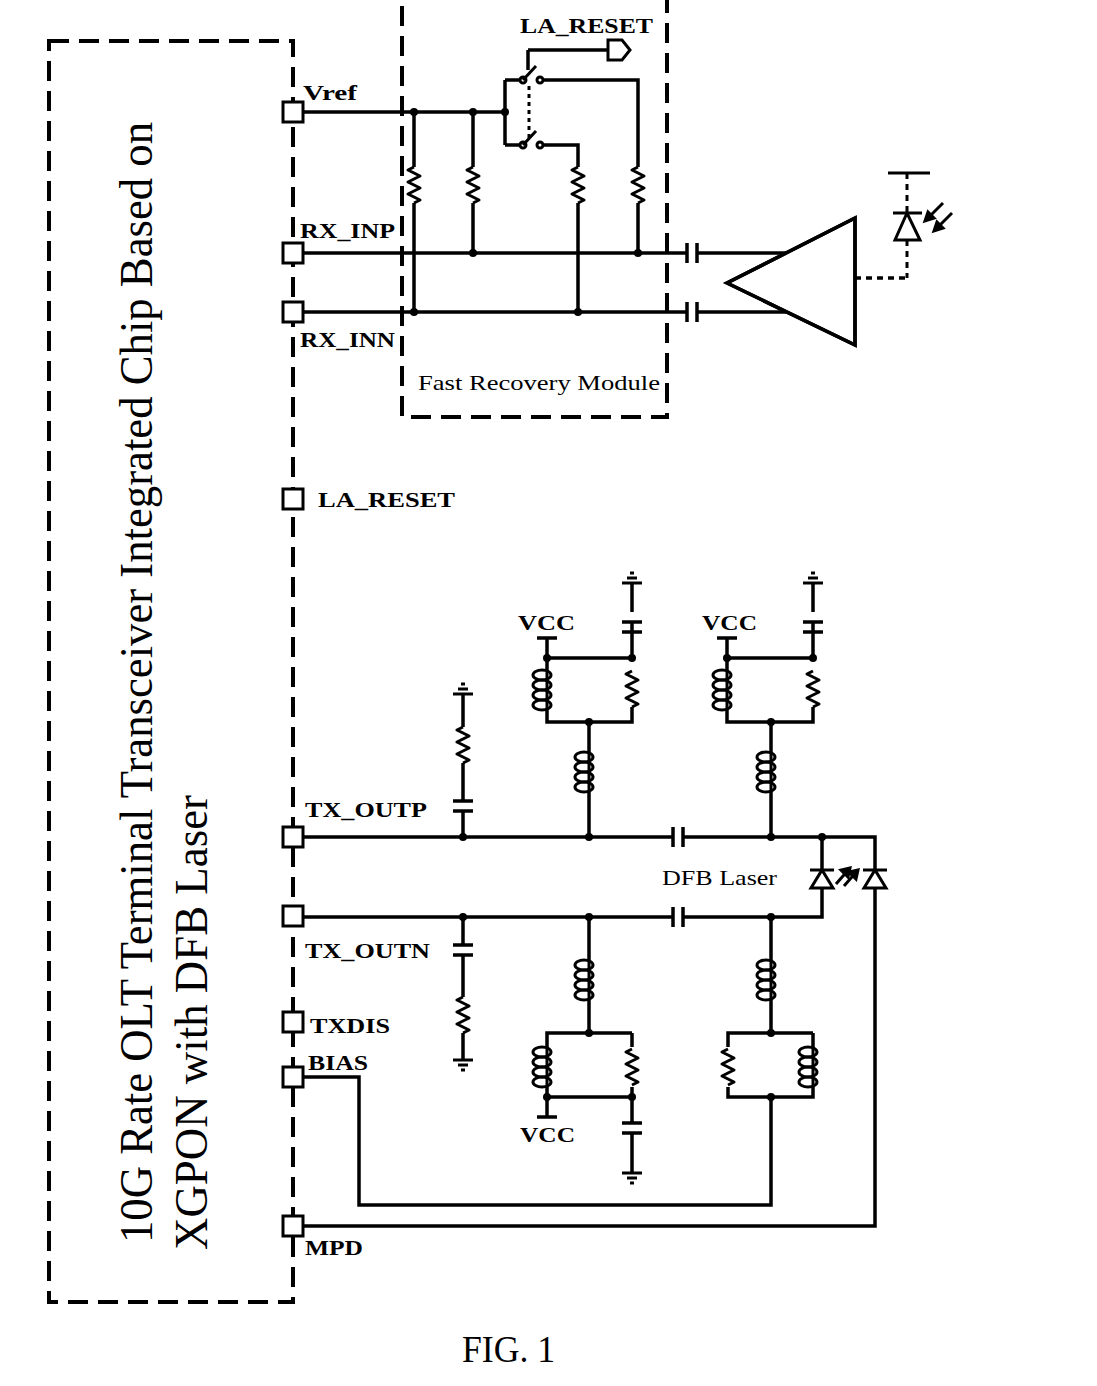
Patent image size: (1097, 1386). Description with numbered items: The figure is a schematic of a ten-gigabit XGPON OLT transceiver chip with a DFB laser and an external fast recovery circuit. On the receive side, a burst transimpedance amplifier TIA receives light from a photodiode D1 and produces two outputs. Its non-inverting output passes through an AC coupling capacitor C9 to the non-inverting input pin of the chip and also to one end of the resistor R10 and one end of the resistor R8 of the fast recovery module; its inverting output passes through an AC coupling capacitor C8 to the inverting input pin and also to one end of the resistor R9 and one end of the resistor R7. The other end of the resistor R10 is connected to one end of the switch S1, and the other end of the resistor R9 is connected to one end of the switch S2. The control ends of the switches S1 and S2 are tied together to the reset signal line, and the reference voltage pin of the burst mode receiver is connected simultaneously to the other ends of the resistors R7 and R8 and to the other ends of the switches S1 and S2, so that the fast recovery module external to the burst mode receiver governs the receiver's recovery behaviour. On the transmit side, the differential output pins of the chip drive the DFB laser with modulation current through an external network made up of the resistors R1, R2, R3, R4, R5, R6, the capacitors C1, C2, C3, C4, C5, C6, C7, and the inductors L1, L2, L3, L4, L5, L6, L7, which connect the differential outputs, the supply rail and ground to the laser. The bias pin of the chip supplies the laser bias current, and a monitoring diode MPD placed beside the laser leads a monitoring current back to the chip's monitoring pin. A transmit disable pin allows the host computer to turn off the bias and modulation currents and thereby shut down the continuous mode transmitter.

The resistor R1 is at (482, 745).
The resistor R2 is at (482, 1015).
The resistor R3 is at (650, 1067).
The resistor R4 is at (650, 689).
The resistor R5 is at (831, 689).
The resistor R6 is at (708, 1067).
The resistor R7 is at (431, 197).
The resistor R8 is at (490, 197).
The resistor R9 is at (562, 197).
The resistor R10 is at (617, 197).
The capacitor C1 is at (480, 809).
The capacitor C2 is at (480, 947).
The capacitor C3 is at (649, 1130).
The capacitor C4 is at (648, 630).
The capacitor C5 is at (680, 821).
The capacitor C6 is at (680, 931).
The capacitor C7 is at (830, 630).
The AC coupling capacitor C8 is at (691, 327).
The AC coupling capacitor C9 is at (691, 240).
The inductor L1 is at (604, 980).
The inductor L2 is at (565, 919).
The inductor L3 is at (525, 690).
The inductor L4 is at (705, 690).
The inductor L5 is at (751, 772).
The inductor L6 is at (751, 980).
The inductor L7 is at (827, 1067).
The switch S1 is at (545, 102).
The switch S2 is at (545, 133).
The photodiode D1 is at (908, 225).
The burst transimpedance amplifier TIA is at (791, 281).
The monitoring diode MPD is at (899, 880).